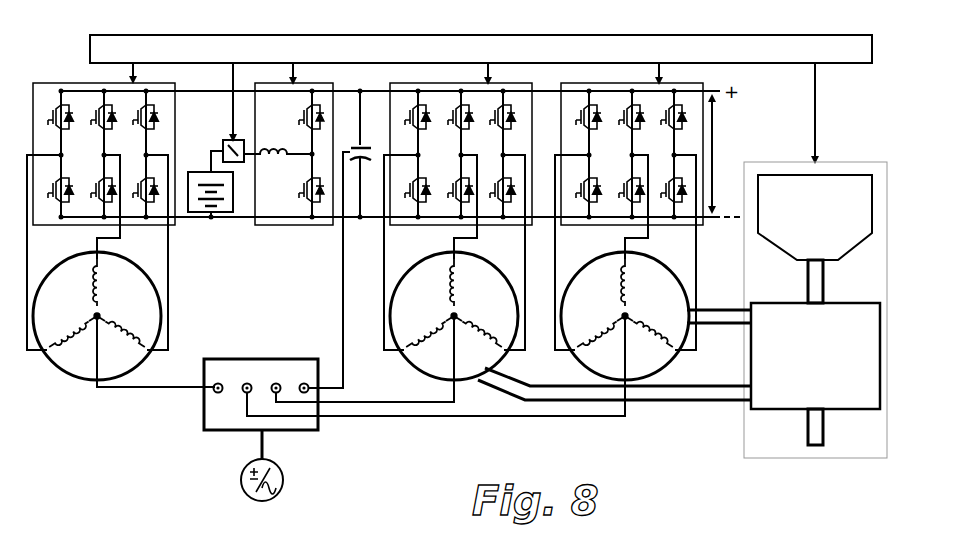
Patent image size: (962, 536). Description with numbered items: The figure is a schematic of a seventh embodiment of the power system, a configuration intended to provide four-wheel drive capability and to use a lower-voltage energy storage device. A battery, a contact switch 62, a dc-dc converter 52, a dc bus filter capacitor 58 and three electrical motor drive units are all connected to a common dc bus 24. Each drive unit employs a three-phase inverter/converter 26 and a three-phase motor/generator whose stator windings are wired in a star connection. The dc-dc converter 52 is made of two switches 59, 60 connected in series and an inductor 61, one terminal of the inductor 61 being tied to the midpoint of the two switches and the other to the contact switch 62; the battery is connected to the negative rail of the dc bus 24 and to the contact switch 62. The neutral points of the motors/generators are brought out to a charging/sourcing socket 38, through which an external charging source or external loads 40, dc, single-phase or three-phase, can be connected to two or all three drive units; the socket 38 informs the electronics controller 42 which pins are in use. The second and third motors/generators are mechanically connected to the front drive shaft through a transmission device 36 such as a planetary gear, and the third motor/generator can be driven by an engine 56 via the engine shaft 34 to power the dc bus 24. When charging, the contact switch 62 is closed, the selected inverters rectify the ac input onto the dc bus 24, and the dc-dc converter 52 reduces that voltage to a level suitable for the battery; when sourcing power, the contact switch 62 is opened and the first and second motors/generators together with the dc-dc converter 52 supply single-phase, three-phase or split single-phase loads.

The common dc bus 24 is at (713, 158).
The inverter/converter 26 is at (130, 81).
The engine shaft 34 is at (807, 285).
The transmission device 36 is at (788, 410).
The charging/sourcing socket 38 is at (253, 358).
The external charging source or external loads 40 is at (283, 475).
The electronics controller 42 is at (821, 50).
The dc-dc converter 52 is at (293, 141).
The engine 56 is at (812, 203).
The dc bus filter capacitor 58 is at (362, 158).
The switch 59 is at (313, 100).
The switch 60 is at (308, 202).
The inductor 61 is at (276, 132).
The contact switch 62 is at (228, 134).